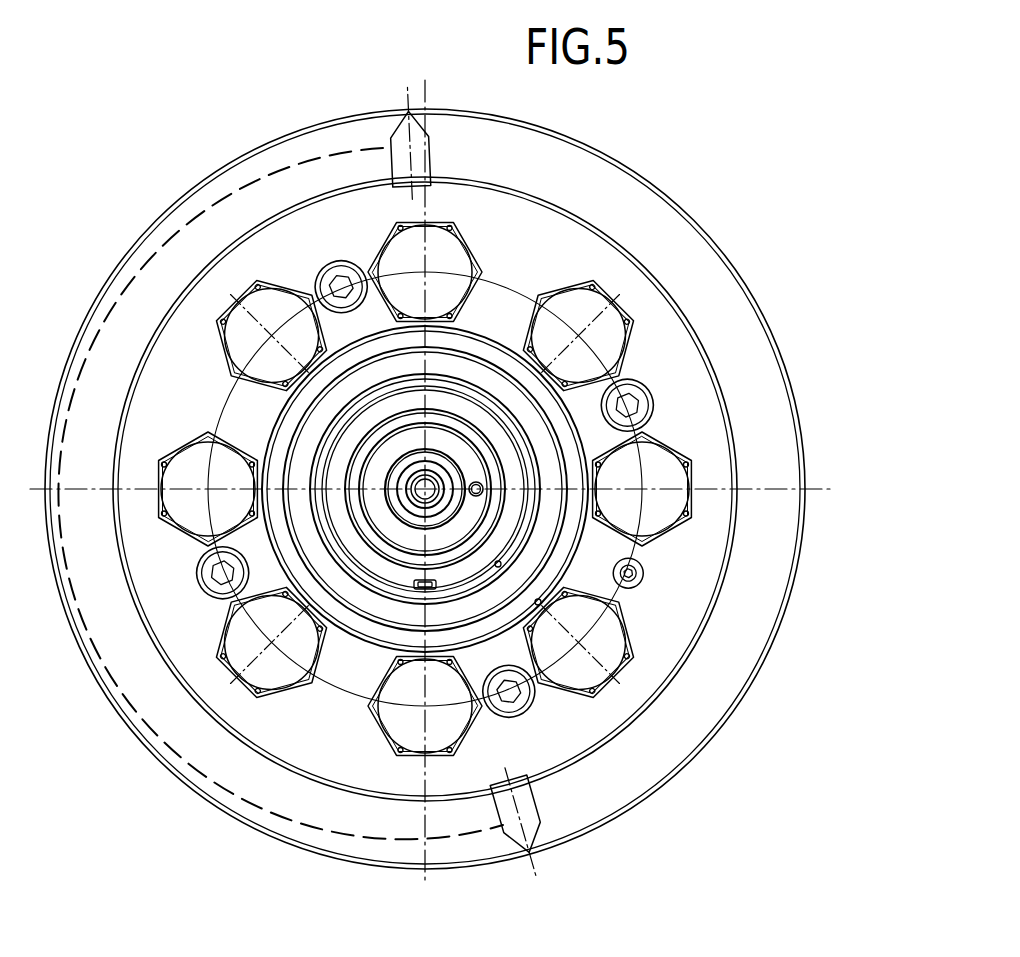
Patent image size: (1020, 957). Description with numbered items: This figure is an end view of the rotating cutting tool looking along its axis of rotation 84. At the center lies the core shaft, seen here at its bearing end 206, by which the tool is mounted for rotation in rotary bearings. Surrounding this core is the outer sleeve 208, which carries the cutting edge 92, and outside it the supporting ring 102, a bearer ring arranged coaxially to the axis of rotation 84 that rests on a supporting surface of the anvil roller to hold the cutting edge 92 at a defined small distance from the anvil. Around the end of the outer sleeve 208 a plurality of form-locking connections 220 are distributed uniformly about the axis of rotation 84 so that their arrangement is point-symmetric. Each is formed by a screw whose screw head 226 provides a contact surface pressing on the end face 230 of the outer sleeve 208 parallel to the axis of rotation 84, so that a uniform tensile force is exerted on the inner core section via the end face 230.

The axis of rotation 84 is at (423, 480).
The cutting edge 92 is at (407, 112).
The supporting ring 102 is at (748, 341).
The bearing end 206 is at (498, 564).
The outer sleeve 208 is at (698, 640).
The form-locking connection 220 is at (233, 707).
The screw head 226 is at (267, 687).
The end face 230 is at (617, 714).